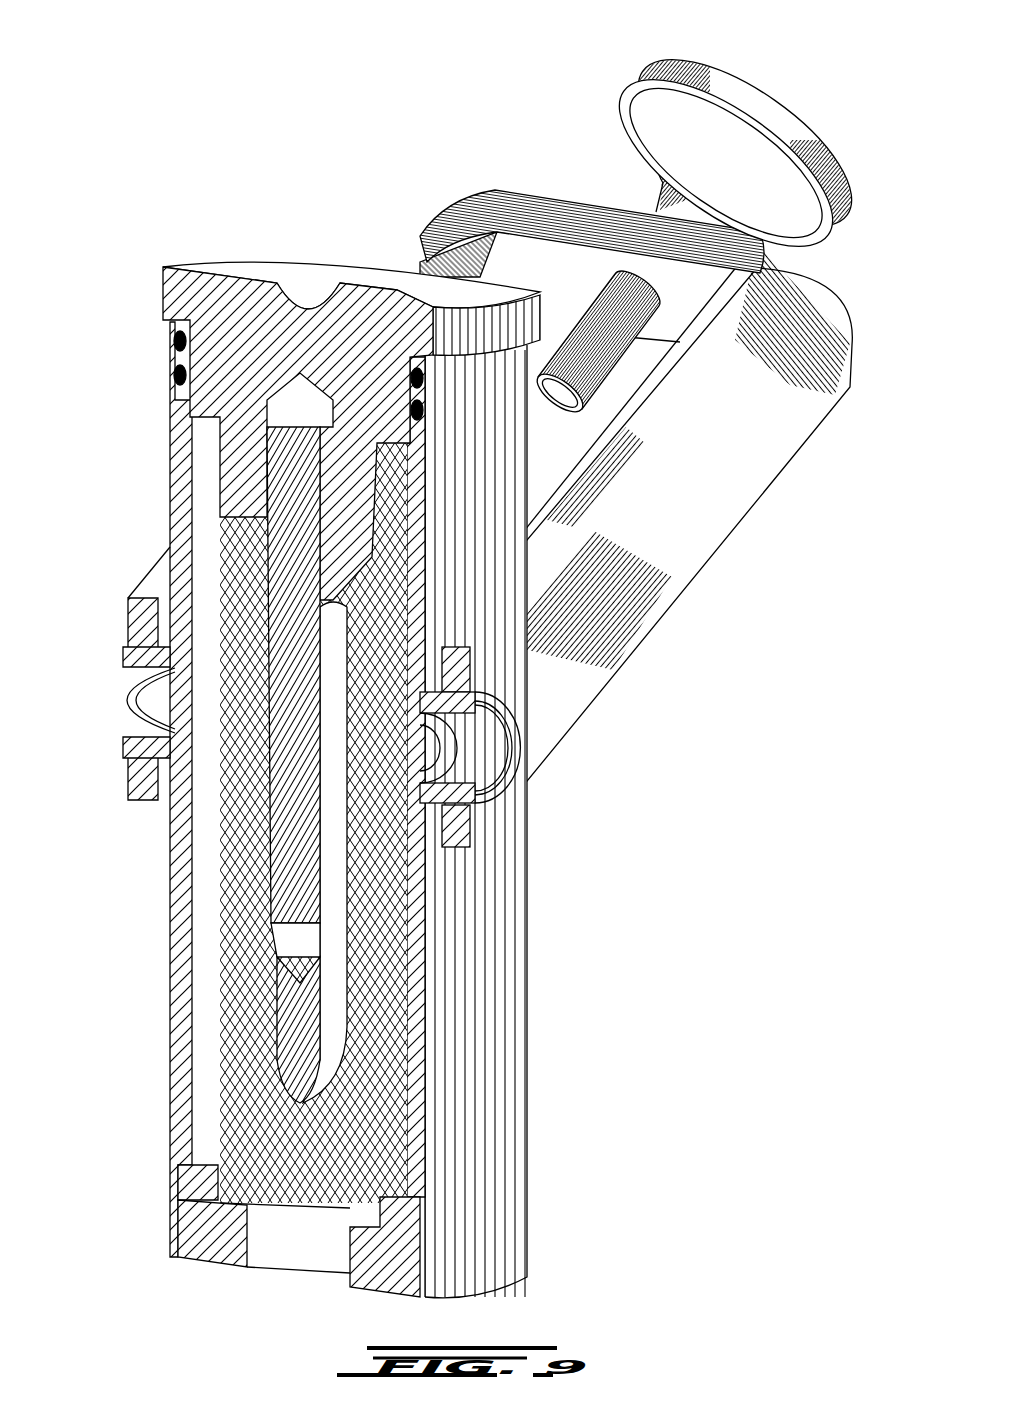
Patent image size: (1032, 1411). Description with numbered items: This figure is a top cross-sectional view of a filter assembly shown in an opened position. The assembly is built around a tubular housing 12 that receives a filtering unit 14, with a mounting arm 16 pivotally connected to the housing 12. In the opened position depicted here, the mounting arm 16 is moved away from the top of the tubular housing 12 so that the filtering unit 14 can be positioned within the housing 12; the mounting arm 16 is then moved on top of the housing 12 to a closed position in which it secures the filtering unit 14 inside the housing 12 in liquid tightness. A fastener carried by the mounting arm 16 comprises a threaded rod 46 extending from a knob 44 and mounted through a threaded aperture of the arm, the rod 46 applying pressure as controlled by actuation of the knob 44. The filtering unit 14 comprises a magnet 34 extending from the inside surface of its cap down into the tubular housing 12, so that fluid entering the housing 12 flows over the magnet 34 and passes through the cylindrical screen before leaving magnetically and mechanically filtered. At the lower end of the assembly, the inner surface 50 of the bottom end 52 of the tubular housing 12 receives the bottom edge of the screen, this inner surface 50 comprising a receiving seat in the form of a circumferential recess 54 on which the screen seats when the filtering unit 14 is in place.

The housing 12 is at (527, 1117).
The filtering unit 14 is at (127, 335).
The mounting arm 16 is at (752, 428).
The magnet 34 is at (283, 870).
The knob 44 is at (797, 122).
The threaded rod 46 is at (597, 327).
The inner surface 50 is at (215, 1168).
The bottom end 52 is at (198, 1228).
The circumferential recess 54 is at (215, 1182).